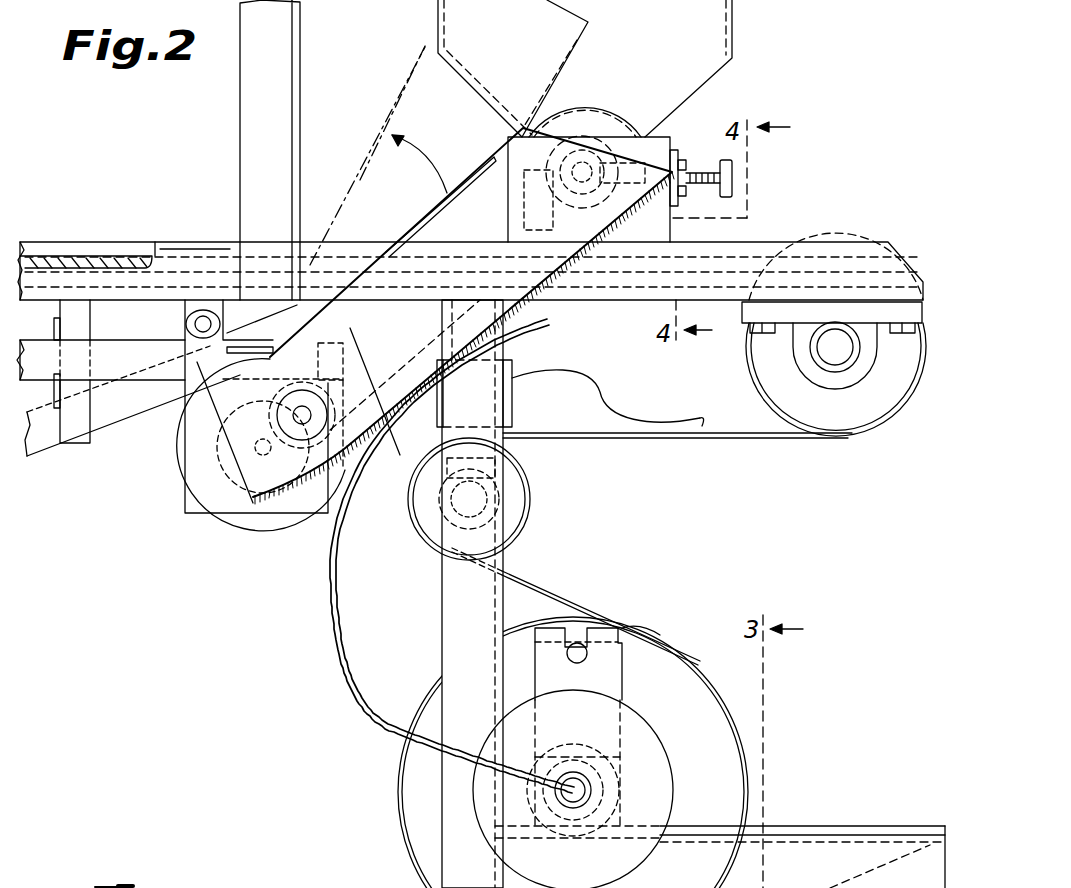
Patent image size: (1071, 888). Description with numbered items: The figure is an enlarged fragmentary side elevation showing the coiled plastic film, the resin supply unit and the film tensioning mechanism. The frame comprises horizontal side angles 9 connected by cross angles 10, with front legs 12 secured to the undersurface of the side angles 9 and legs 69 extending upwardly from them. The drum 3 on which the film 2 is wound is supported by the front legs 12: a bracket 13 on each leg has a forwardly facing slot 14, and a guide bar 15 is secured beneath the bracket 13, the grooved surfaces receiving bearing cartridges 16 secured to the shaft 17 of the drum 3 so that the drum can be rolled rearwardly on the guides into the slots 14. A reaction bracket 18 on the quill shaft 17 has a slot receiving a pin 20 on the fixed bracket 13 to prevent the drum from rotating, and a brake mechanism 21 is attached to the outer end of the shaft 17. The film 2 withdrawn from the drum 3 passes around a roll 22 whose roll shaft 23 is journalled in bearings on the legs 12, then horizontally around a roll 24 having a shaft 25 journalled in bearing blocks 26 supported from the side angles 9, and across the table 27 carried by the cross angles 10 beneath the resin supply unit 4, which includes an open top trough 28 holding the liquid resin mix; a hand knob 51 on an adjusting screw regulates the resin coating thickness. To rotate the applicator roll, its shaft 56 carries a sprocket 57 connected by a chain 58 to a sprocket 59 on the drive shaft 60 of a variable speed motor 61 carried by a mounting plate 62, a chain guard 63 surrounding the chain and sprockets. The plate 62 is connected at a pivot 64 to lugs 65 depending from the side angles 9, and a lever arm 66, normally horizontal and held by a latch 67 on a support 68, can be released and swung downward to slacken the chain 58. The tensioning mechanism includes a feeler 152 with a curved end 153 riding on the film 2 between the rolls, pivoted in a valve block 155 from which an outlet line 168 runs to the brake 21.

The film 2 is at (548, 586).
The drum 3 is at (665, 652).
The resin supply unit 4 is at (737, 42).
The side angles 9 is at (198, 250).
The cross angles 10 is at (545, 303).
The front legs 12 is at (441, 604).
The bracket 13 is at (622, 693).
The slot 14 is at (600, 770).
The guide bar 15 is at (842, 846).
The bearing cartridges 16 is at (604, 742).
The shaft 17 is at (592, 789).
The reaction bracket 18 is at (622, 628).
The pin 20 is at (577, 643).
The brake mechanism 21 is at (665, 804).
The roll 22 is at (531, 496).
The roll shaft 23 is at (500, 476).
The roll 24 is at (858, 433).
The shaft 25 is at (842, 362).
The bearing blocks 26 is at (885, 347).
The table 27 is at (88, 258).
The trough 28 is at (703, 96).
The hand knob 51 is at (733, 178).
The shaft 56 is at (618, 136).
The sprocket 57 is at (588, 136).
The chain 58 is at (462, 162).
The sprocket 59 is at (250, 524).
The drive shaft 60 is at (216, 514).
The variable speed motor 61 is at (186, 468).
The mounting plate 62 is at (196, 494).
The chain guard 63 is at (196, 452).
The pivot 64 is at (226, 345).
The lugs 65 is at (184, 306).
The lever arm 66 is at (48, 322).
The latch 67 is at (62, 398).
The support 68 is at (80, 444).
The legs 69 is at (293, 133).
The feeler 152 is at (608, 384).
The curved end 153 is at (702, 420).
The valve block 155 is at (513, 400).
The outlet line 168 is at (330, 632).